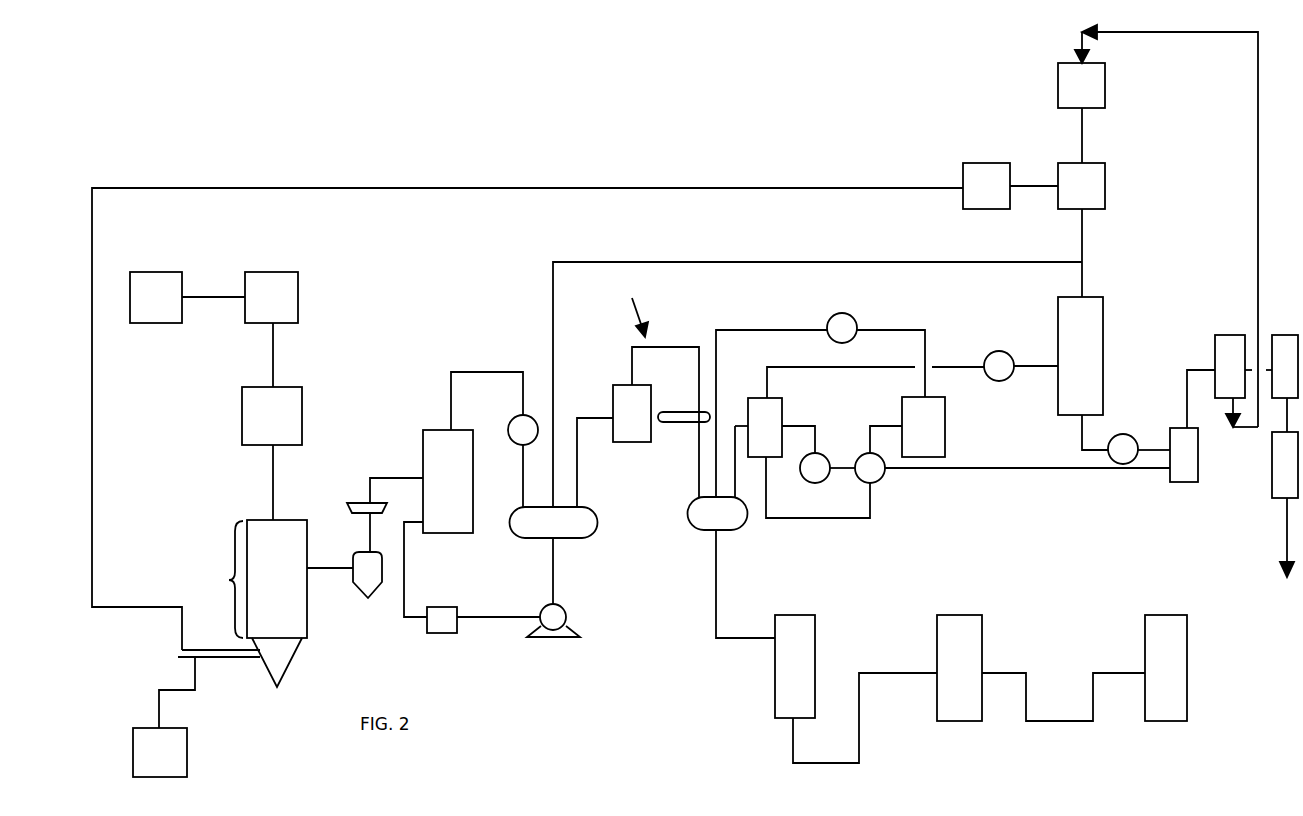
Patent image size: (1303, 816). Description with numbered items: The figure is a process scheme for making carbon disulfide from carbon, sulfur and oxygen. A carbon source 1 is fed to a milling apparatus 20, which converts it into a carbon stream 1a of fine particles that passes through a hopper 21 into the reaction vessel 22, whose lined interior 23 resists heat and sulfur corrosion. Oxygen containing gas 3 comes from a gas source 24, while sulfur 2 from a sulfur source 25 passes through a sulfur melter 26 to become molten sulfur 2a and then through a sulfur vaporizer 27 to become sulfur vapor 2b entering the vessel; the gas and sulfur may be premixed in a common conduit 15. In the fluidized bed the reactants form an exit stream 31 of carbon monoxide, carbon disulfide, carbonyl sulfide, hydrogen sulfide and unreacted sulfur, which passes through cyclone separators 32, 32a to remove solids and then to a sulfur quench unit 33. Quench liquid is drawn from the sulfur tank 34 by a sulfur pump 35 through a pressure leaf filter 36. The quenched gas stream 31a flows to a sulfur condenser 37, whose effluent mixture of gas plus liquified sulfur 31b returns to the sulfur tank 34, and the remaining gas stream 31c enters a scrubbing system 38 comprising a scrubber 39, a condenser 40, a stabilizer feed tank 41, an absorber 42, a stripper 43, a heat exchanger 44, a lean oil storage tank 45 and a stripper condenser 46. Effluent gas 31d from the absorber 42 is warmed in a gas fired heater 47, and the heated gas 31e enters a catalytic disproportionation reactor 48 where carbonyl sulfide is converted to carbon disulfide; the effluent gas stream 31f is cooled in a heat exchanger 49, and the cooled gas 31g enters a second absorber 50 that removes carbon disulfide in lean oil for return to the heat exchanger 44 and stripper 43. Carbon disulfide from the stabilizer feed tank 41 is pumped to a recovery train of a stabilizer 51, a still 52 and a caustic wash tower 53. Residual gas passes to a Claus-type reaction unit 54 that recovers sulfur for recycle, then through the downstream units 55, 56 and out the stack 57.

The carbon source 1 is at (149, 308).
The carbon stream 1a is at (273, 362).
The sulfur 2 is at (1190, 32).
The molten sulfur 2a is at (738, 266).
The sulfur vapor 2b is at (141, 607).
The oxygen containing gas 3 is at (159, 710).
The common conduit 15 is at (232, 658).
The milling apparatus 20 is at (260, 308).
The hopper 21 is at (261, 427).
The reaction vessel 22 is at (222, 579).
The interior of reaction vessel 23 is at (265, 588).
The gas source 24 is at (148, 763).
The sulfur source 25 is at (1069, 96).
The sulfur melter 26 is at (1069, 197).
The sulfur vaporizer 27 is at (974, 197).
The exit stream 31 is at (331, 568).
The quenched gas stream 31a is at (475, 372).
The effluent mixture of gas plus liquified sulfur 31b is at (523, 452).
The gas stream 31c is at (588, 414).
The effluent gas 31d is at (794, 368).
The gas 31e is at (1031, 365).
The effluent gas stream 31f is at (1082, 440).
The effluent gas 31g is at (1147, 448).
The cyclone separator 32 is at (362, 586).
The cyclone separator 32a is at (366, 503).
The sulfur quench unit 33 is at (436, 479).
The sulfur tank 34 is at (541, 533).
The sulfur pump 35 is at (562, 612).
The pressure leaf filter 36 is at (442, 612).
The sulfur condenser 37 is at (512, 419).
The CS2 scrubbing system 38 is at (635, 306).
The CS2 scrubber 39 is at (620, 424).
The CS2 condenser 40 is at (682, 420).
The stabilizer feed tank 41 is at (706, 524).
The CS2 absorber 42 is at (762, 412).
The CS2 stripper 43 is at (911, 438).
The heat exchanger 44 is at (880, 480).
The lean oil storage tank 45 is at (810, 477).
The stripper condenser 46 is at (849, 314).
The gas fired heater 47 is at (996, 375).
The catalytic disproportionation reactor 48 is at (1068, 354).
The heat exchanger 49 is at (1115, 464).
The CS2 absorber 50 is at (1190, 468).
The CS2 stabilizer 51 is at (784, 660).
The CS2 still 52 is at (947, 660).
The caustic wash tower 53 is at (1154, 660).
The reaction unit 54 is at (1232, 352).
The separator 55 is at (1291, 348).
The absorber 56 is at (1282, 462).
The stack 57 is at (1284, 560).